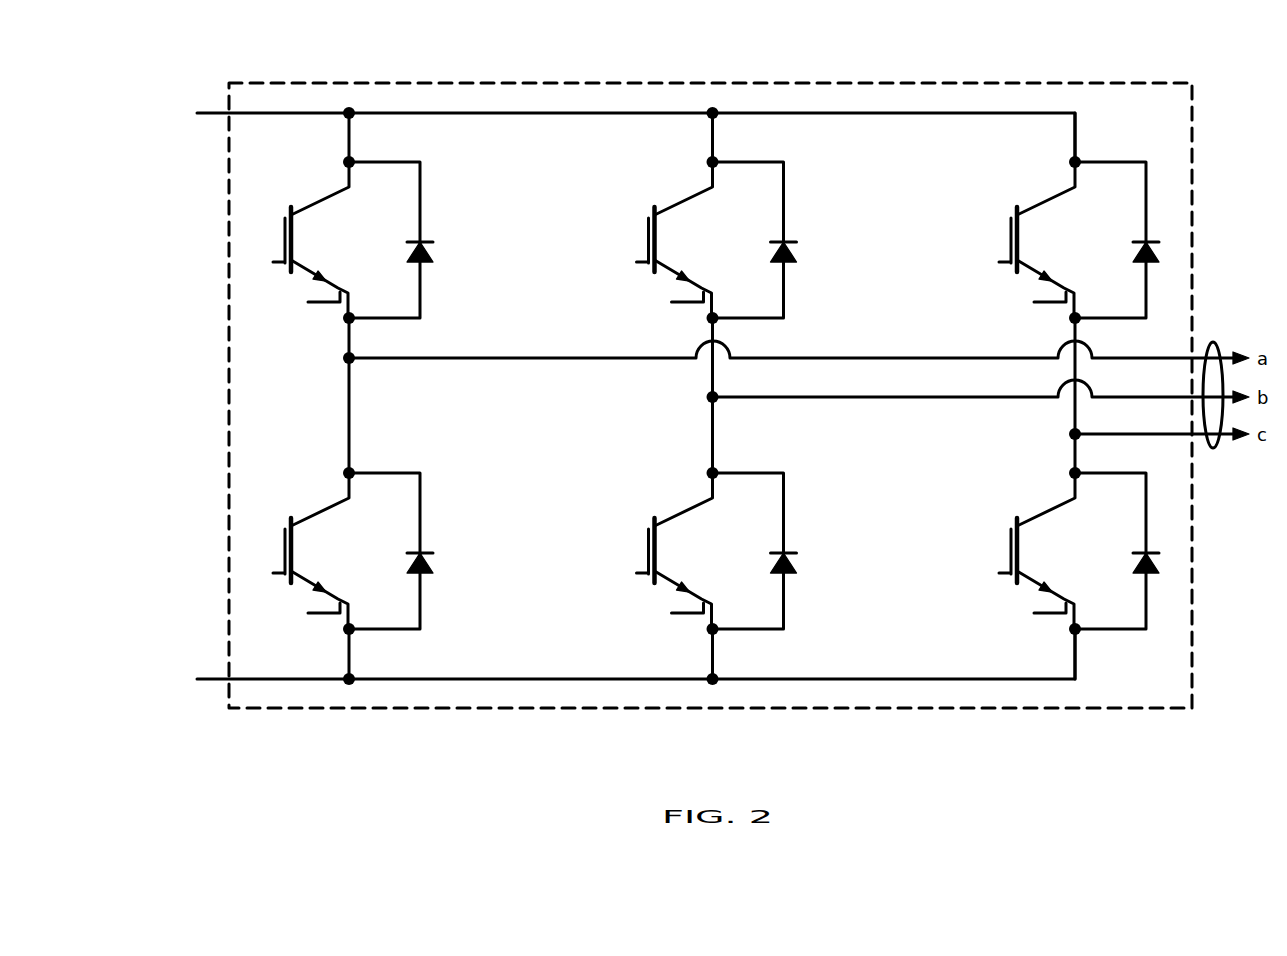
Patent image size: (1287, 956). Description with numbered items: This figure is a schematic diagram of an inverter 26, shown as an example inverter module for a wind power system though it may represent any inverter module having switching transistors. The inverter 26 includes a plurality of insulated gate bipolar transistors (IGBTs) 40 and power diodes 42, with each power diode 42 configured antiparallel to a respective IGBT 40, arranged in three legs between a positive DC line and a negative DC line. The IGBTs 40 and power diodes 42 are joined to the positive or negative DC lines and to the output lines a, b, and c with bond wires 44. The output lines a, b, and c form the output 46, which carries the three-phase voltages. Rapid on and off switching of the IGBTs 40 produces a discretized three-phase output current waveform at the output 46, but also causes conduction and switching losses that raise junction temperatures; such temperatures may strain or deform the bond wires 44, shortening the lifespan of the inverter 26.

The inverter 26 is at (252, 742).
The insulated gate bipolar transistor 40 is at (285, 242).
The power diode 42 is at (413, 248).
The bond wire 44 is at (351, 138).
The output 46 is at (1216, 343).